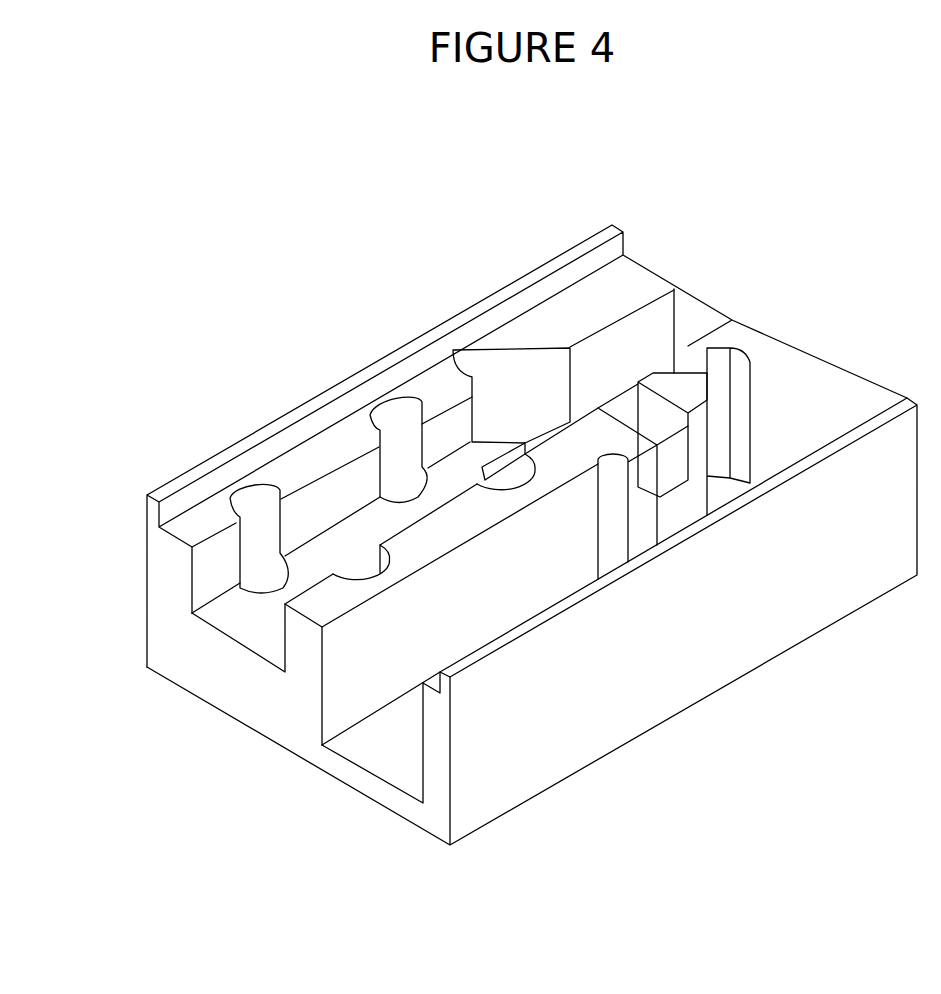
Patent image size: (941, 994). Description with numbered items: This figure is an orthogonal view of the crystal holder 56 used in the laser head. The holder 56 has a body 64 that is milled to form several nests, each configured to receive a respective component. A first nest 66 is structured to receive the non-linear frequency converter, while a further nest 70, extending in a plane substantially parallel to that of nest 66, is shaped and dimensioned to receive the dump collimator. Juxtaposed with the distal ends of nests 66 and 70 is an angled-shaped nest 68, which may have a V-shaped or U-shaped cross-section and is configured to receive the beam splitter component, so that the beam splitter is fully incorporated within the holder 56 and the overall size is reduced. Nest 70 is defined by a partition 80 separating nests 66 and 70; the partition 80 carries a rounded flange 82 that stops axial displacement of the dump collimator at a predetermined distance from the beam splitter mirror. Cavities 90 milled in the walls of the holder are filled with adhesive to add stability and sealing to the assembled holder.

The holder 56 is at (497, 291).
The body 64 is at (280, 706).
The nest 66 is at (250, 627).
The angled-shaped nest 68 is at (500, 382).
The nest 70 is at (395, 762).
The partition 80 is at (493, 573).
The rounded flange 82 is at (612, 498).
The cavities 90 is at (258, 520).